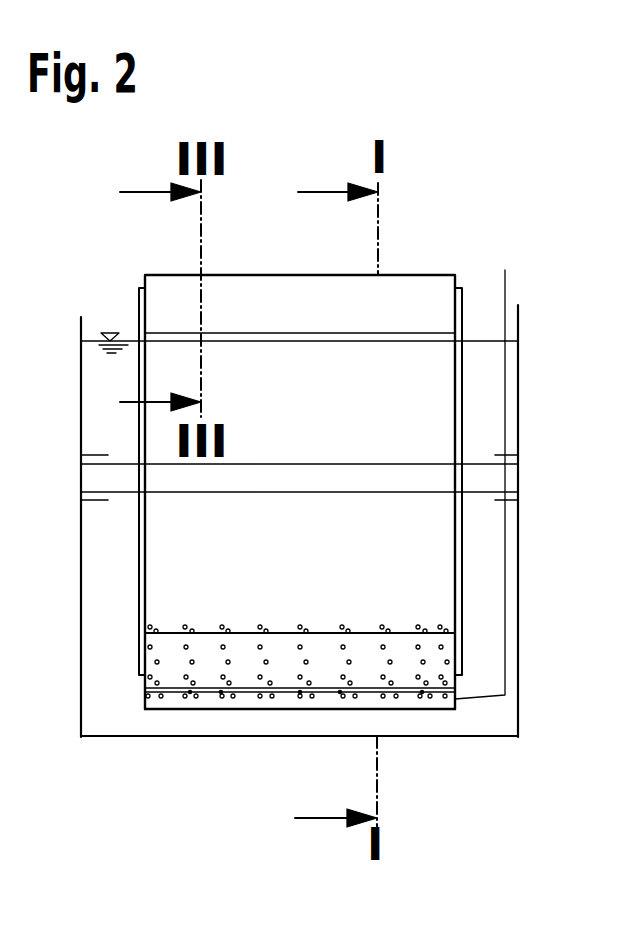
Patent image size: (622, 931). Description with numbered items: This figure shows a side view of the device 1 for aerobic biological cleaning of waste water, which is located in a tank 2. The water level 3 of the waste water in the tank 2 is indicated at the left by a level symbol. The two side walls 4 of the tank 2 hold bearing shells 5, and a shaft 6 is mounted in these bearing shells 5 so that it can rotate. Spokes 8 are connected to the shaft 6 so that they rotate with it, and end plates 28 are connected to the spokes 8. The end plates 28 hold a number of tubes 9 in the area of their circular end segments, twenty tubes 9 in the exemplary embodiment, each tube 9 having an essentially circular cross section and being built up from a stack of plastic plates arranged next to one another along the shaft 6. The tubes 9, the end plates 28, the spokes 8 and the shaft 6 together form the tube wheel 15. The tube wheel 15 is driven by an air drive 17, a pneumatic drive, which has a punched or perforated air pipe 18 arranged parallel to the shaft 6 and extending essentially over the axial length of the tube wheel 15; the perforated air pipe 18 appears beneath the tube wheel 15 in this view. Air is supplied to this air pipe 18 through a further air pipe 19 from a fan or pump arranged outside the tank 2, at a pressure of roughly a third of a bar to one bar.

The device 1 is at (308, 501).
The tank 2 is at (304, 506).
The water level 3 is at (97, 337).
The side walls 4 is at (80, 625).
The bearing shells 5 is at (102, 510).
The shaft 6 is at (102, 478).
The spokes 8 is at (303, 424).
The tubes 9 is at (130, 687).
The tube wheel 15 is at (493, 252).
The air drive 17 is at (437, 713).
The air pipe 18 is at (208, 700).
The air pipe 19 is at (503, 583).
The end plates 28 is at (138, 302).